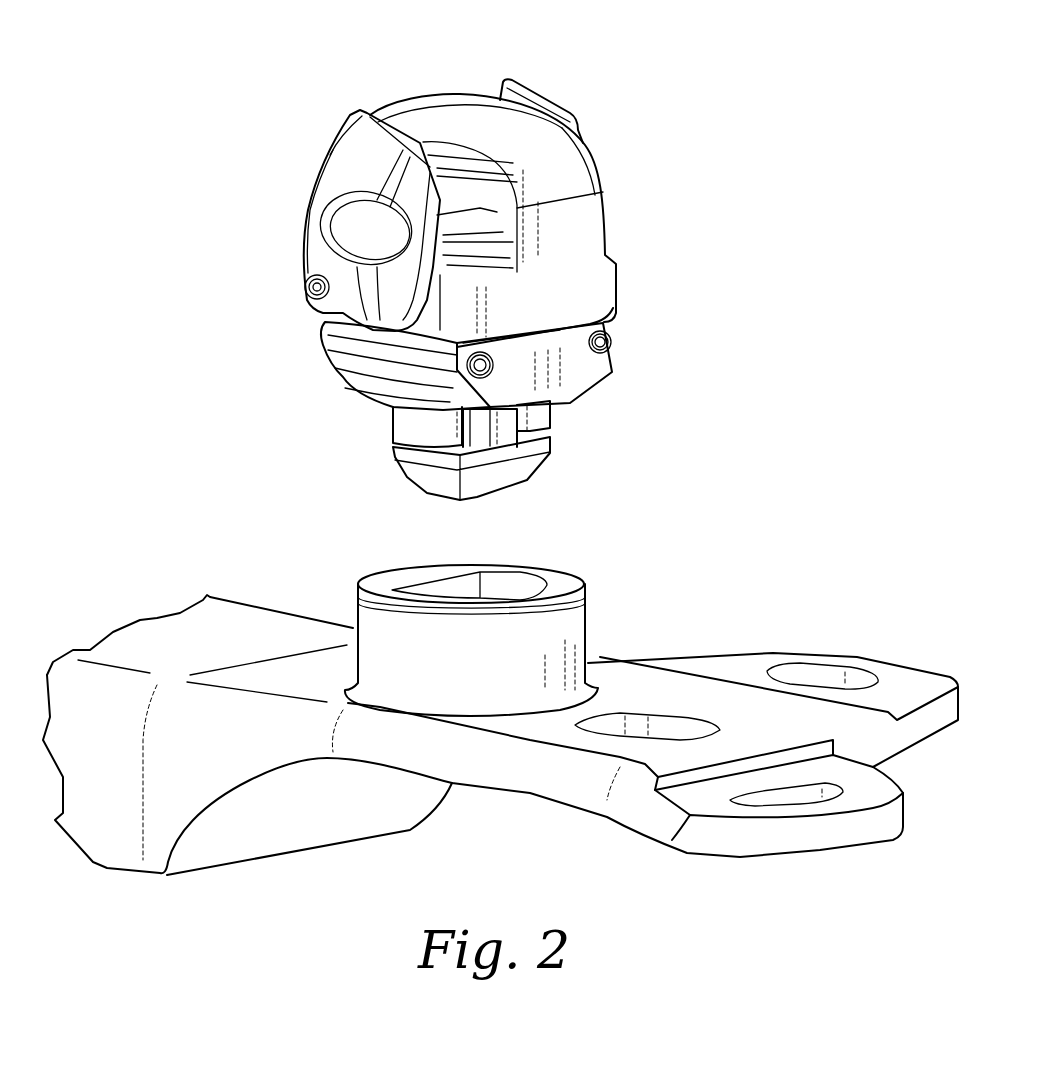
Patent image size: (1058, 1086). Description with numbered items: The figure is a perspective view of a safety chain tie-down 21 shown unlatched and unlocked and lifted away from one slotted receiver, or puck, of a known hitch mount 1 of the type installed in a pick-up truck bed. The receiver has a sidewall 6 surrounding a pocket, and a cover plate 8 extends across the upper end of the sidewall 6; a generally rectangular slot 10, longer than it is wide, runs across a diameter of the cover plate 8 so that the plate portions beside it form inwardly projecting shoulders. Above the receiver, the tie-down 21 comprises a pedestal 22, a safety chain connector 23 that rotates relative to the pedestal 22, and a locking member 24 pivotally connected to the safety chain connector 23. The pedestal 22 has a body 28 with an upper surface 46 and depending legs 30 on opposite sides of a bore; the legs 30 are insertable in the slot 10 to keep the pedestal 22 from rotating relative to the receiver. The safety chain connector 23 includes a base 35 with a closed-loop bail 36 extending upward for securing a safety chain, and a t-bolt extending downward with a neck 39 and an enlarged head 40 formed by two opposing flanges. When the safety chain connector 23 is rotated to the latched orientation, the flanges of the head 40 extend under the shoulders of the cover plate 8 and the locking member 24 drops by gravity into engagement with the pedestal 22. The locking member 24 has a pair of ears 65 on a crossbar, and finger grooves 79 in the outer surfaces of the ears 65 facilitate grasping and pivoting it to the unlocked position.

The hitch mount 1 is at (268, 550).
The sidewall 6 is at (590, 635).
The cover plate 8 is at (393, 577).
The slot 10 is at (520, 592).
The safety chain tie-down 21 is at (728, 123).
The pedestal 22 is at (280, 342).
The safety chain connector 23 is at (384, 78).
The locking member 24 is at (300, 238).
The body 28 is at (590, 367).
The legs 30 is at (393, 425).
The base 35 is at (620, 288).
The bail 36 is at (600, 157).
The neck 39 is at (497, 437).
The head 40 is at (493, 497).
The upper surface 46 is at (410, 337).
The ears 65 is at (345, 150).
The finger grooves 79 is at (346, 222).